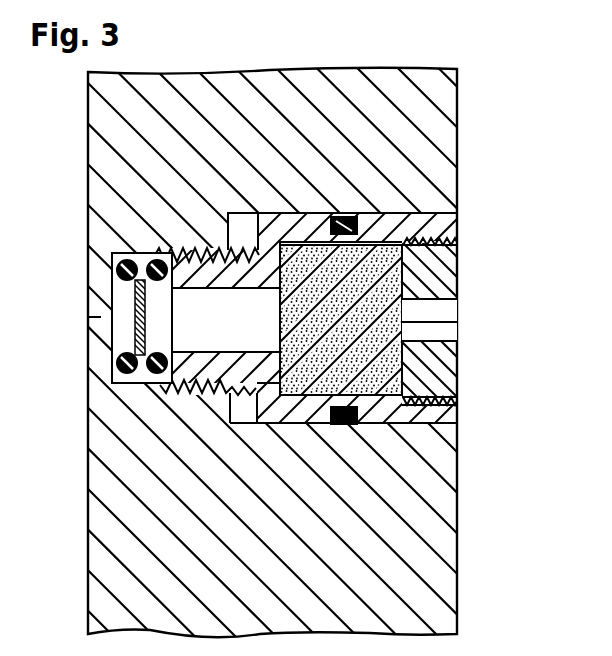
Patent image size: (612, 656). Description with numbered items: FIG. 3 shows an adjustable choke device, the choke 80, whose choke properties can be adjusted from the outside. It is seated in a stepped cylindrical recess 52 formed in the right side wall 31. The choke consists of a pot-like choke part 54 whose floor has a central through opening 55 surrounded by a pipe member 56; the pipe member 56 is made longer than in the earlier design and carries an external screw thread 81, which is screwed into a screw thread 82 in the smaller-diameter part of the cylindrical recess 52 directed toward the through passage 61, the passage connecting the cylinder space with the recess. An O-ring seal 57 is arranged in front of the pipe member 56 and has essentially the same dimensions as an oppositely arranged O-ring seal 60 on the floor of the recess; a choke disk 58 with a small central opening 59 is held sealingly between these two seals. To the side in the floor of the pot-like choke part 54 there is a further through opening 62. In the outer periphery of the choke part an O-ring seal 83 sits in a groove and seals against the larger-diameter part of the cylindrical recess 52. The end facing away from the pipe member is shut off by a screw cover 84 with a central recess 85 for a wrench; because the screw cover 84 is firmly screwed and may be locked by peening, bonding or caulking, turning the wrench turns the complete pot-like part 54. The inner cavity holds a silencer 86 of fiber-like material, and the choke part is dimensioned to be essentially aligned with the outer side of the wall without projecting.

The right side wall 31 is at (435, 498).
The cylindrical recess 52 is at (152, 324).
The pot-like choke part 54 is at (306, 285).
The central through opening 55 is at (236, 331).
The pipe member 56 is at (222, 250).
The O-ring seal 57 is at (157, 392).
The choke disk 58 is at (142, 253).
The small central opening 59 is at (135, 335).
The O-ring seal 60 is at (117, 269).
The through passage 61 is at (100, 317).
The through opening 62 is at (197, 253).
The choke 80 is at (306, 293).
The external screw thread 81 is at (243, 248).
The screw thread 82 is at (175, 253).
The O-ring seal 83 is at (340, 217).
The screw cover 84 is at (437, 274).
The recess 85 is at (445, 308).
The silencer 86 is at (374, 262).